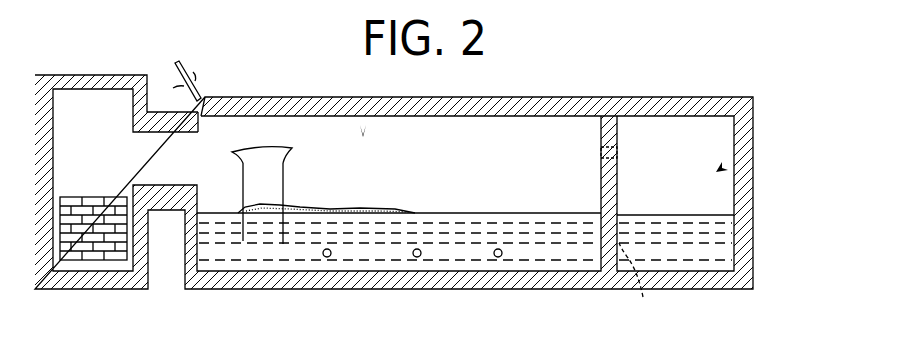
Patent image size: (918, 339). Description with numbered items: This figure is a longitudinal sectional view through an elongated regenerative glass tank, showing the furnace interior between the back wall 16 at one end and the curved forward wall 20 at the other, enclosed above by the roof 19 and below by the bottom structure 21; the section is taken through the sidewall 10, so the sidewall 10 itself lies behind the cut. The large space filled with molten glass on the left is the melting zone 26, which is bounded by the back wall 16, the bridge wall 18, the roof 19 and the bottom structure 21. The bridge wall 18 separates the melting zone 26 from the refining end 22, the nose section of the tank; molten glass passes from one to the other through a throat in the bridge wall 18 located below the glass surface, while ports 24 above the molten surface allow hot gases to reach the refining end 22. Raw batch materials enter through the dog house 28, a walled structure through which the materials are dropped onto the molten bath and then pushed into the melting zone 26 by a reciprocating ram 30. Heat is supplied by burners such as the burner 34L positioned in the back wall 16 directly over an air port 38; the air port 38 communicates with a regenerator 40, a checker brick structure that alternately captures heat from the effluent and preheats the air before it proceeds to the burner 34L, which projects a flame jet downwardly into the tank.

The sidewall 10 is at (479, 161).
The back wall 16 is at (232, 248).
The bridge wall 18 is at (611, 189).
The roof 19 is at (432, 100).
The curved forward wall 20 is at (745, 195).
The bottom structure 21 is at (423, 278).
The refining end 22 is at (722, 168).
The ports 24 is at (618, 155).
The melting zone 26 is at (363, 130).
The dog house 28 is at (268, 188).
The ram 30 is at (282, 202).
The burner 34L is at (188, 72).
The air port 38 is at (217, 117).
The regenerator 40 is at (86, 100).